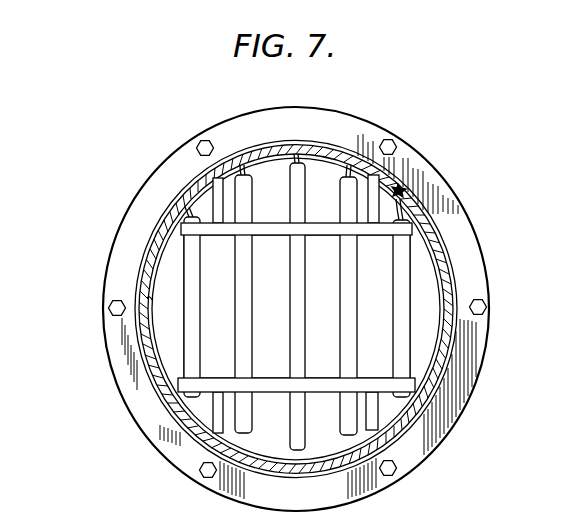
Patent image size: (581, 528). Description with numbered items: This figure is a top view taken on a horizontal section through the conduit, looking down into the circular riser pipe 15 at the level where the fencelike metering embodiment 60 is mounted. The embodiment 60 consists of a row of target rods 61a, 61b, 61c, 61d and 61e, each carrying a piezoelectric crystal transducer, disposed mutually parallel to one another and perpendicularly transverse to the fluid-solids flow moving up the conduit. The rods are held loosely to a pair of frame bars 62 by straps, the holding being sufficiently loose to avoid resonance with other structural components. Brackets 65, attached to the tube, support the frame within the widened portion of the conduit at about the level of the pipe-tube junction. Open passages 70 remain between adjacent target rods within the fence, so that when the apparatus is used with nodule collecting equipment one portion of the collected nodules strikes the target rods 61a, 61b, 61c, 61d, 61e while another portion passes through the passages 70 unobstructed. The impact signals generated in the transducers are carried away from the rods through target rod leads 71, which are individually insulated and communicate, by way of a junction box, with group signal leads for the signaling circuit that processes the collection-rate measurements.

The riser pipe 15 is at (200, 186).
The fencelike embodiment 60 is at (401, 189).
The target rod 61a is at (190, 327).
The target rod 61b is at (240, 355).
The target rod 61c is at (300, 325).
The target rod 61d is at (350, 351).
The target rod 61e is at (400, 369).
The frame bars 62 is at (182, 226).
The brackets 65 is at (213, 198).
The passages 70 is at (330, 258).
The target rod leads 71 is at (366, 153).